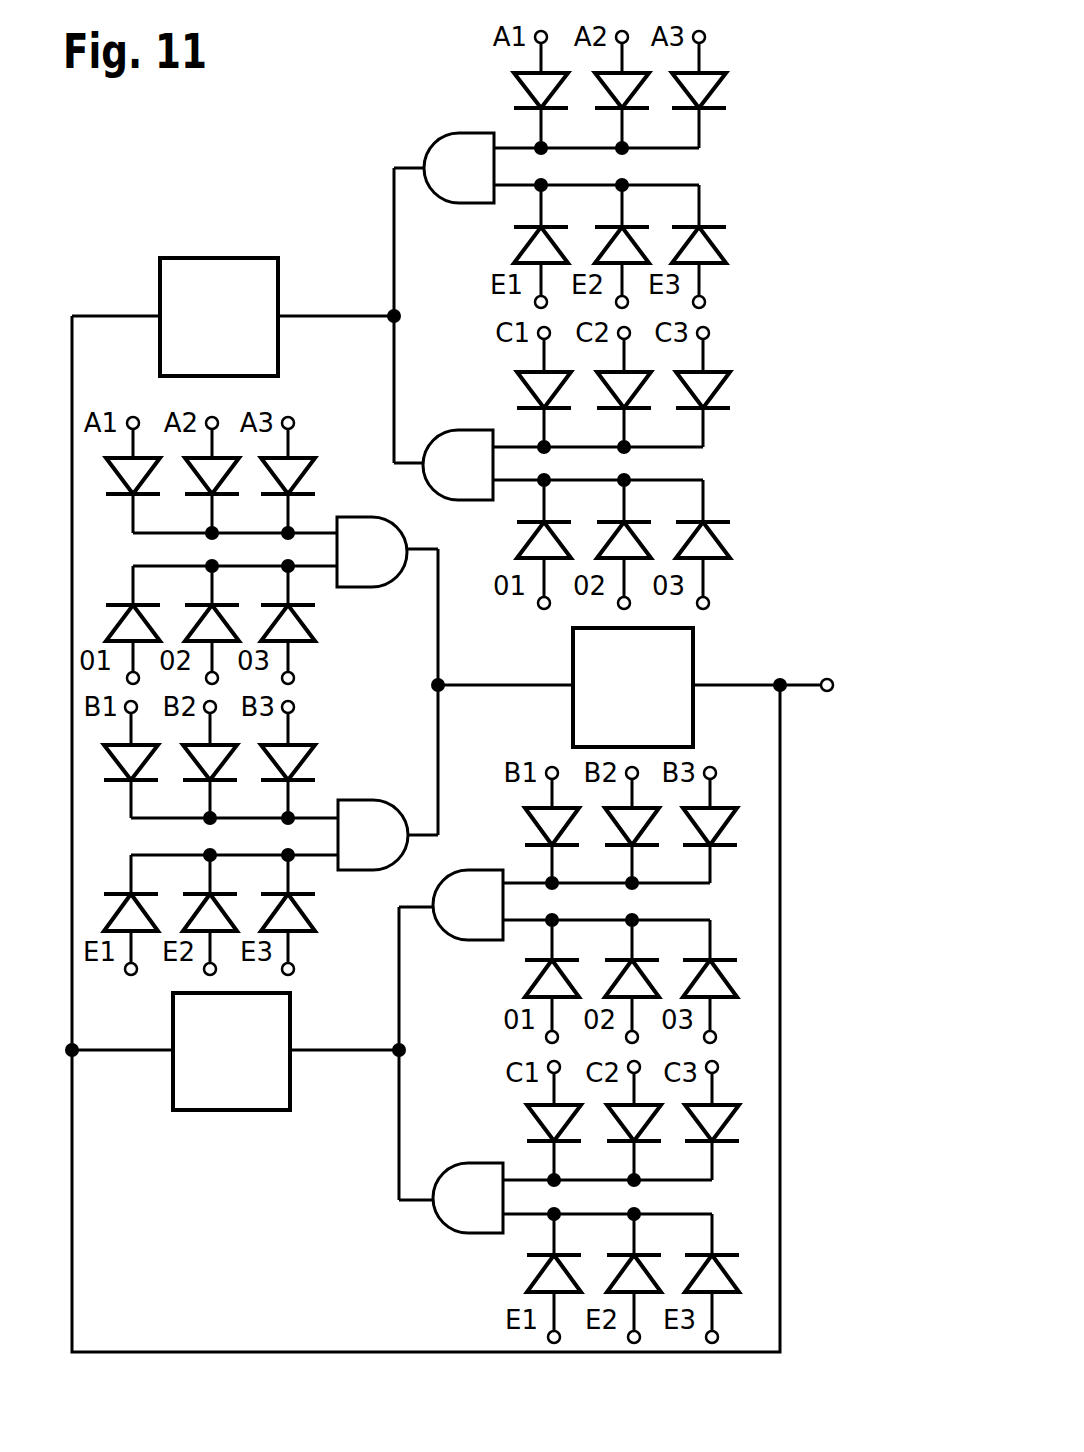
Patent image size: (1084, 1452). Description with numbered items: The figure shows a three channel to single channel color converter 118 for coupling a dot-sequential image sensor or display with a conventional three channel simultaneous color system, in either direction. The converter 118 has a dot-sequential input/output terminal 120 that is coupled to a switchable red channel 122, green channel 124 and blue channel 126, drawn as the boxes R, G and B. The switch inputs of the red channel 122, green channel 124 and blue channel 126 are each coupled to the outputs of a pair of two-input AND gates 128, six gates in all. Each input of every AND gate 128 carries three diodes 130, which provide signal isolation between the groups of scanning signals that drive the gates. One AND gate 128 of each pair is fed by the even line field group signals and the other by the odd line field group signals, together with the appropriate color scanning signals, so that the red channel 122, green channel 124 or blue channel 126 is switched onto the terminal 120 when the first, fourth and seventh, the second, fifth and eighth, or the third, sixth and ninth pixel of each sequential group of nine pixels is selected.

The three channel to single channel color converter 118 is at (183, 170).
The dot-sequential input/output terminal 120 is at (832, 692).
The red channel 122 is at (185, 265).
The green channel 124 is at (683, 660).
The blue channel 126 is at (200, 1112).
The two-input AND gate 128 is at (478, 142).
The diode 130 is at (718, 546).